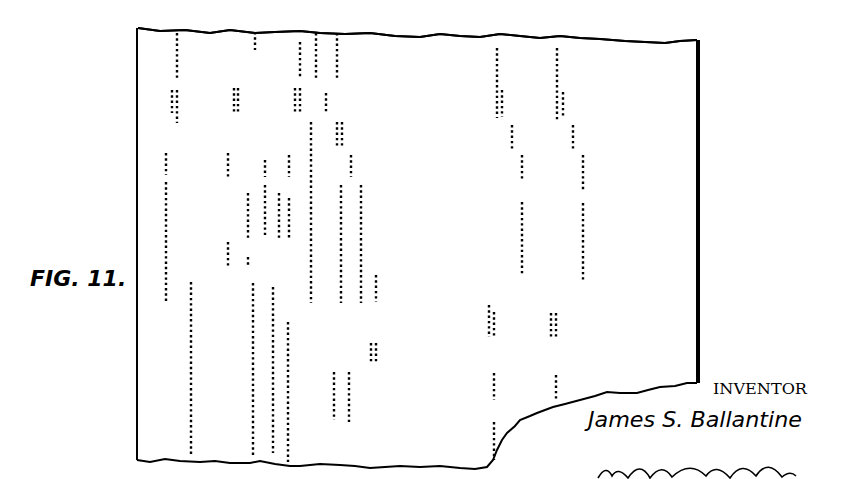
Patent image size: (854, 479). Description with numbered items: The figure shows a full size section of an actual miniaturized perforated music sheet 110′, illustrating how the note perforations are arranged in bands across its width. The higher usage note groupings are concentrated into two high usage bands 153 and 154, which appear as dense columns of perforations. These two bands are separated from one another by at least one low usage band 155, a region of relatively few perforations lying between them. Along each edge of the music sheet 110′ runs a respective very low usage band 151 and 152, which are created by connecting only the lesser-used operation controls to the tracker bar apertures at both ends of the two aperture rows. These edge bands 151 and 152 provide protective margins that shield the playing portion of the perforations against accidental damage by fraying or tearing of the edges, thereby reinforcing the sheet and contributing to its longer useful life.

The music sheet 110' is at (446, 248).
The low usage band 151 is at (137, 108).
The low usage band 152 is at (693, 203).
The high usage band 153 is at (273, 33).
The high usage band 154 is at (545, 42).
The low usage band 155 is at (418, 40).